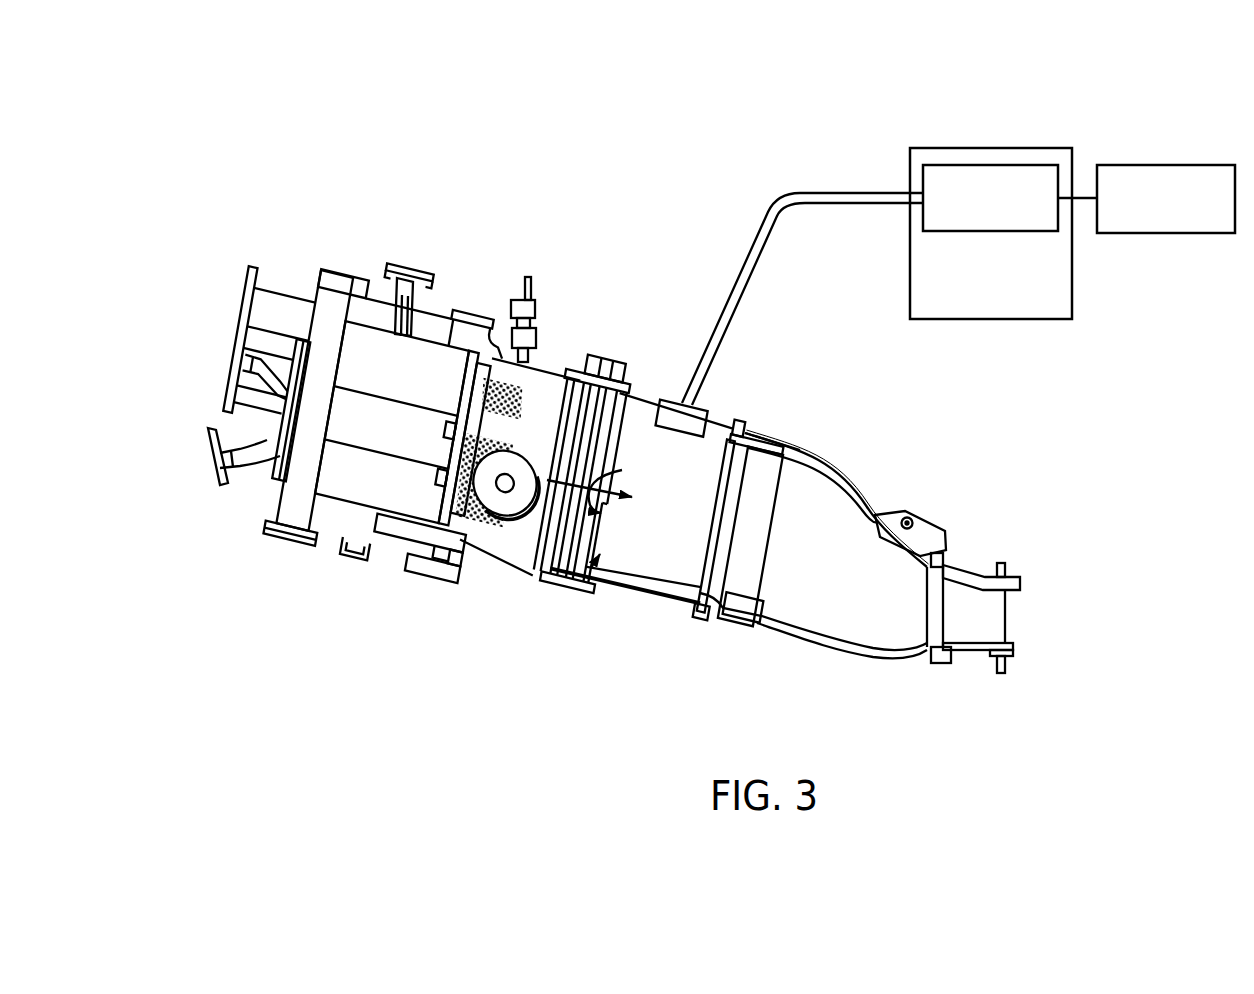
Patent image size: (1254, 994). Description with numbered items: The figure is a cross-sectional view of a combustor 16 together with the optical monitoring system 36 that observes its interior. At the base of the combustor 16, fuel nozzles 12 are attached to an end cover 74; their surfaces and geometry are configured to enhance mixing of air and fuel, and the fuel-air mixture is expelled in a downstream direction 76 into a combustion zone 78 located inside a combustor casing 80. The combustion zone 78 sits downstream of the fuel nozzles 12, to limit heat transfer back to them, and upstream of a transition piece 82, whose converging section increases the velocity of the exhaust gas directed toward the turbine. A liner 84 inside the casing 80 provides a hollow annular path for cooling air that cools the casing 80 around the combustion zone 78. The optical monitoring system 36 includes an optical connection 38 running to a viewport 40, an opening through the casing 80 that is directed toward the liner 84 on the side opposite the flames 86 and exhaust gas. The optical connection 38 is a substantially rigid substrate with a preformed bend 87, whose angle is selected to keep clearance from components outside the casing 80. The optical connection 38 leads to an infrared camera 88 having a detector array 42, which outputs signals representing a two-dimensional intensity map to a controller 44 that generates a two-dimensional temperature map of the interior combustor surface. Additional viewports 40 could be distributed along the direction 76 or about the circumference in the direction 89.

The fuel nozzles 12 is at (360, 380).
The combustor 16 is at (657, 301).
The optical monitoring system 36 is at (1072, 240).
The optical connection 38 is at (837, 193).
The viewport 40 is at (707, 427).
The detector array 42 is at (988, 165).
The controller 44 is at (1165, 165).
The end cover 74 is at (292, 490).
The downstream direction 76 is at (617, 480).
The combustion zone 78 is at (602, 571).
The combustor casing 80 is at (477, 567).
The transition piece 82 is at (818, 622).
The liner 84 is at (583, 385).
The flames 86 is at (483, 393).
The preformed bend 87 is at (769, 175).
The infrared camera 88 is at (990, 320).
The circumferential direction 89 is at (604, 468).